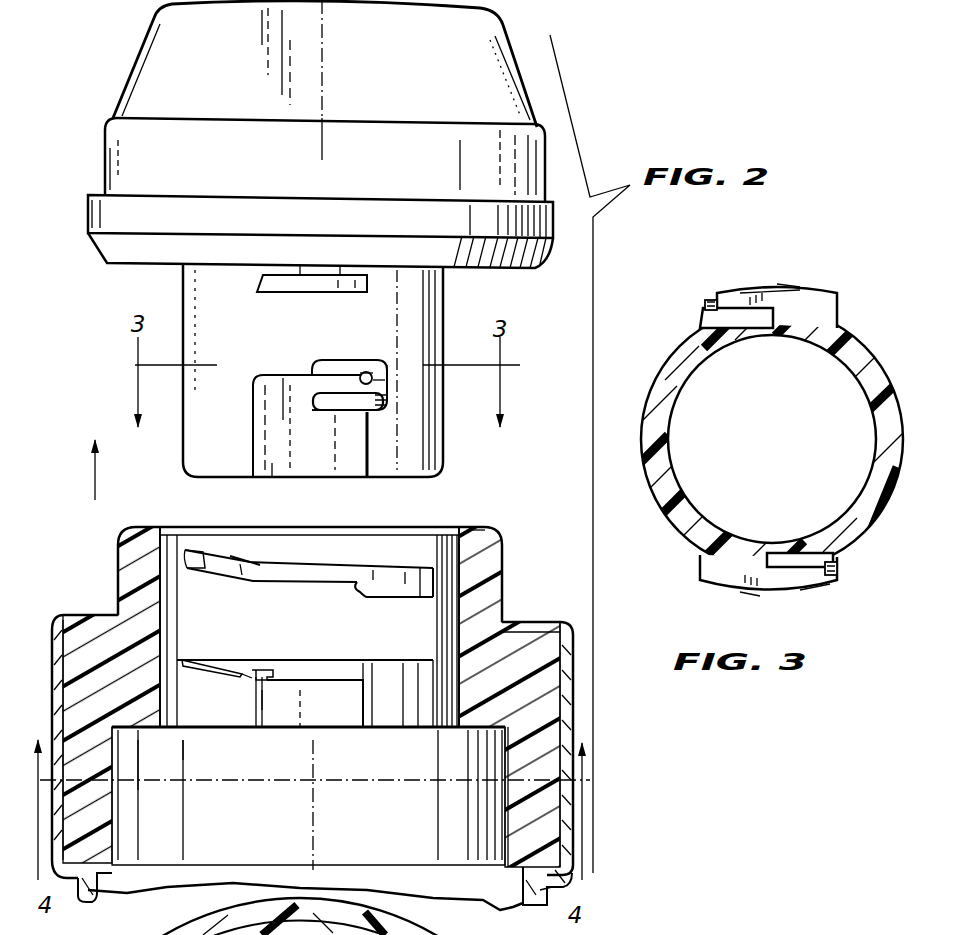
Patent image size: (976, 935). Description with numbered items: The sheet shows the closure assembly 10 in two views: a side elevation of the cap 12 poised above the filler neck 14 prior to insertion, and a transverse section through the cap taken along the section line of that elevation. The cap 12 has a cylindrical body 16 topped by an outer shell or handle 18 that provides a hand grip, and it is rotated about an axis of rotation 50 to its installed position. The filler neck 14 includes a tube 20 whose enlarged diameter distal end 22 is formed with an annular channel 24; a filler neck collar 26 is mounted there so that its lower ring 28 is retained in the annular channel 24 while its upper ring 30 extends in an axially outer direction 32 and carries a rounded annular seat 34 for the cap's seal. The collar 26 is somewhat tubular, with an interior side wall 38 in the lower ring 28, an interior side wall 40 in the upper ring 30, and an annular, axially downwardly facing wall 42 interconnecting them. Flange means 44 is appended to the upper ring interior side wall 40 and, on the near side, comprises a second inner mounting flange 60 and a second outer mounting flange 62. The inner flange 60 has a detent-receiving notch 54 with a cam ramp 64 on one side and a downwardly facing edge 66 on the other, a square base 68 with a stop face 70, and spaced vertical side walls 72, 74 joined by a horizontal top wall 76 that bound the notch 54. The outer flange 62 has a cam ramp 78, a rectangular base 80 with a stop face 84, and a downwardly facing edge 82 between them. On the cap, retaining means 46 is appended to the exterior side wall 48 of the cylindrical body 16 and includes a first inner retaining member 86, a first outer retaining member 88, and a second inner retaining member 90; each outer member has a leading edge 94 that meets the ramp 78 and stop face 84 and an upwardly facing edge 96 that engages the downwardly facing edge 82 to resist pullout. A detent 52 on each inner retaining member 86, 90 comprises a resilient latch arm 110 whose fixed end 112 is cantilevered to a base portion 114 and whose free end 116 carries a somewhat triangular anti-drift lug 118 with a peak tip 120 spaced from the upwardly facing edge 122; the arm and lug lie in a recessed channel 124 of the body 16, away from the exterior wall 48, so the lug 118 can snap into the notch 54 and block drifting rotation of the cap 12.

In FIG. 2, the closure assembly 10 is at (113, 78).
In FIG. 2, the cap 12 is at (95, 155).
In FIG. 2, the filler neck 14 is at (70, 890).
In FIG. 2, the cylindrical body 16 is at (448, 463).
In FIG. 3, the cylindrical body 16 is at (660, 522).
In FIG. 2, the outer shell or handle 18 is at (517, 50).
In FIG. 2, the tube 20 is at (103, 885).
In FIG. 2, the distal end 22 is at (47, 650).
In FIG. 2, the annular channel 24 is at (72, 645).
In FIG. 2, the filler neck collar 26 is at (503, 793).
In FIG. 2, the lower ring 28 is at (547, 810).
In FIG. 2, the upper ring 30 is at (488, 593).
In FIG. 2, the axially outer direction 32 is at (98, 473).
In FIG. 2, the rounded annular seat 34 is at (488, 533).
In FIG. 2, the interior side wall of lower ring 38 is at (113, 830).
In FIG. 2, the interior side wall of upper ring 40 is at (167, 729).
In FIG. 2, the annular wall 42 is at (123, 733).
In FIG. 2, the flange means 44 is at (305, 706).
In FIG. 2, the retaining means 46 is at (372, 316).
In FIG. 3, the retaining means 46 is at (783, 280).
In FIG. 2, the exterior side wall 48 is at (210, 434).
In FIG. 3, the exterior side wall 48 is at (860, 345).
In FIG. 2, the axis of rotation 50 is at (322, 86).
In FIG. 3, the axis of rotation 50 is at (770, 437).
In FIG. 2, the detent 52 is at (383, 381).
In FIG. 3, the detent 52 is at (702, 295).
In FIG. 2, the detent-receiving notch 54 is at (252, 697).
In FIG. 2, the second inner mounting flange 60 is at (312, 655).
In FIG. 2, the second outer mounting flange 62 is at (303, 557).
In FIG. 2, the cam ramp 64 is at (193, 667).
In FIG. 2, the downwardly facing edge 66 is at (360, 727).
In FIG. 2, the square base 68 is at (387, 683).
In FIG. 2, the stop face 70 is at (360, 707).
In FIG. 2, the vertical side wall 72 is at (270, 680).
In FIG. 2, the vertical side wall 74 is at (248, 690).
In FIG. 2, the horizontal top wall 76 is at (263, 700).
In FIG. 2, the cam ramp 78 is at (208, 573).
In FIG. 2, the rectangular base 80 is at (395, 578).
In FIG. 2, the downwardly facing edge 82 is at (287, 583).
In FIG. 2, the stop face 84 is at (363, 600).
In FIG. 2, the first inner retaining member 86 is at (392, 358).
In FIG. 3, the first inner retaining member 86 is at (793, 595).
In FIG. 2, the first outer retaining member 88 is at (377, 278).
In FIG. 3, the second inner retaining member 90 is at (760, 282).
In FIG. 2, the leading edge 94 is at (257, 276).
In FIG. 2, the upwardly facing edge 96 is at (298, 278).
In FIG. 2, the resilient latch arm 110 is at (330, 383).
In FIG. 3, the resilient latch arm 110 is at (790, 300).
In FIG. 2, the fixed end 112 is at (275, 397).
In FIG. 3, the fixed end 112 is at (825, 305).
In FIG. 2, the base portion 114 is at (272, 465).
In FIG. 2, the free end 116 is at (353, 393).
In FIG. 3, the free end 116 is at (727, 292).
In FIG. 2, the anti-drift lug 118 is at (353, 375).
In FIG. 3, the anti-drift lug 118 is at (708, 307).
In FIG. 2, the peak tip 120 is at (365, 372).
In FIG. 2, the upwardly facing edge 122 is at (285, 375).
In FIG. 2, the recessed channel 124 is at (392, 405).